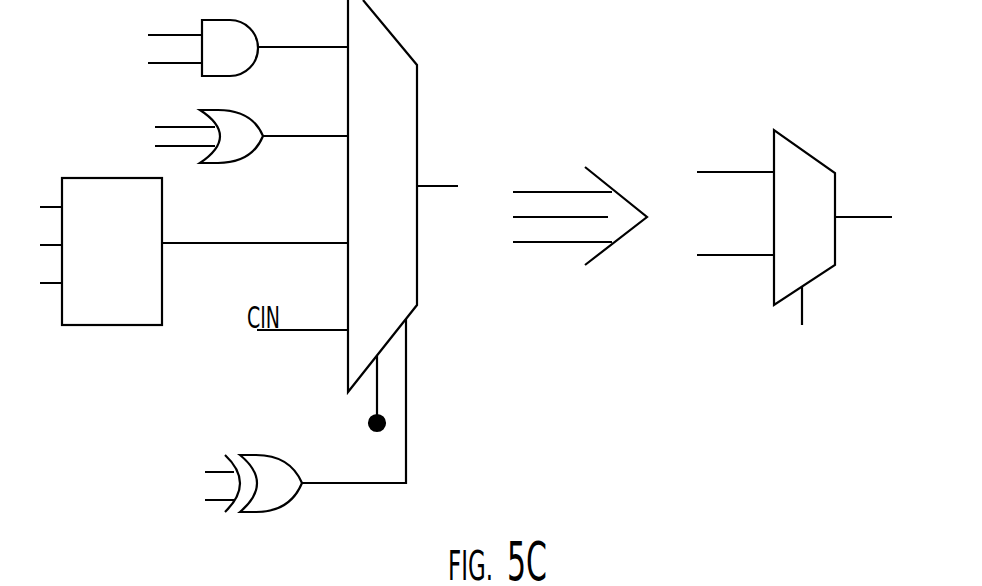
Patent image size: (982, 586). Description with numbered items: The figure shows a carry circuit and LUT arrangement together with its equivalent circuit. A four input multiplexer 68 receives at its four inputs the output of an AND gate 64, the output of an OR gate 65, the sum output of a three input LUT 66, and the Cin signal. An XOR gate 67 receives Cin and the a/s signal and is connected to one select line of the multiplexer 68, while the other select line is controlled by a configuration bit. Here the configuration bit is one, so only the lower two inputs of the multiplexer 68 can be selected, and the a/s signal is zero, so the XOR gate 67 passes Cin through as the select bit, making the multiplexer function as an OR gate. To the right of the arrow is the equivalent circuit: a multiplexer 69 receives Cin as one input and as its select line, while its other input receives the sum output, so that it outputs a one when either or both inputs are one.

The AND gate 64 is at (240, 47).
The OR gate 65 is at (242, 134).
The three input LUT 66 is at (194, 251).
The XOR gate 67 is at (281, 432).
The four input multiplexer 68 is at (403, 219).
The multiplexer 69 is at (791, 245).